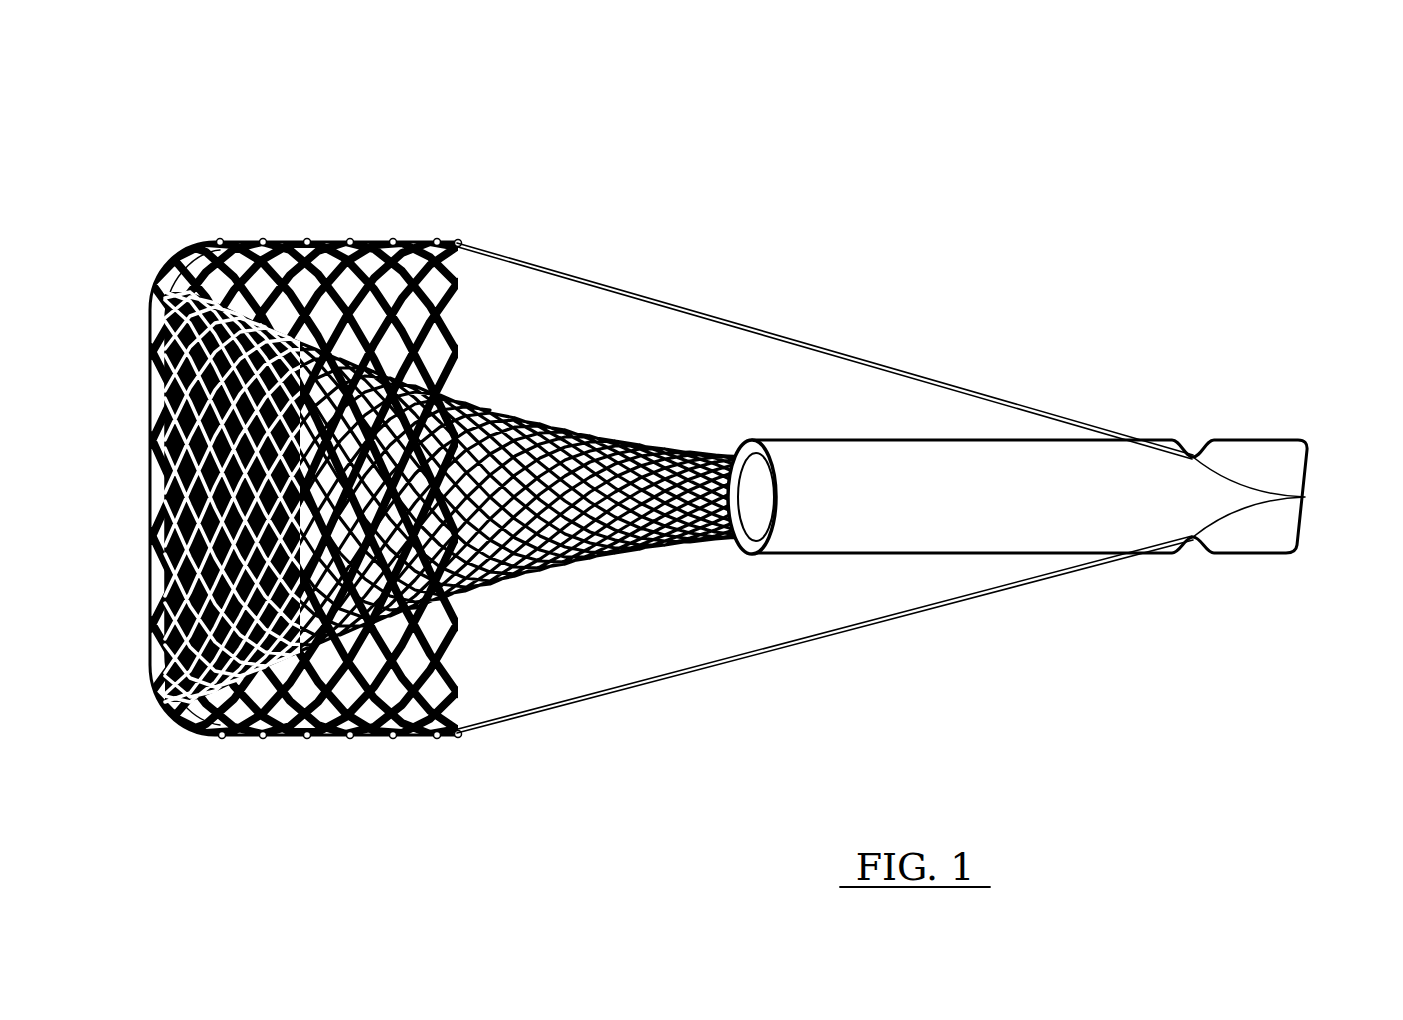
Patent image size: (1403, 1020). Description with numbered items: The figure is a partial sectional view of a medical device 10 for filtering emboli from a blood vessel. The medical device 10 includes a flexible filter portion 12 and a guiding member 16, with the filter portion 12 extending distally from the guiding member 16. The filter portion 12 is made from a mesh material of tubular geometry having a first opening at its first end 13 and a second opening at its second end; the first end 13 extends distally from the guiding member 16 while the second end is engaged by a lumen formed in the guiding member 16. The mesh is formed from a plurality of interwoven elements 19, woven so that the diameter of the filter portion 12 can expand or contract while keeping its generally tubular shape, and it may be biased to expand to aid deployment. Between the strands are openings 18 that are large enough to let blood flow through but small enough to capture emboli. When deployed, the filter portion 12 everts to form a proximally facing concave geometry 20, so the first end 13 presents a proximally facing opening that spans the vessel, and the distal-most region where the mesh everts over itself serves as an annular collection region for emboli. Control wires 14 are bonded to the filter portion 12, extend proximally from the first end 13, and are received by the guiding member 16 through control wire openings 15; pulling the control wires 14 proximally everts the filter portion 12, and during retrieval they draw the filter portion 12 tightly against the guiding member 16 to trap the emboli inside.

The medical device 10 is at (771, 511).
The filter portion 12 is at (627, 562).
The first end 13 is at (408, 328).
The control wires 14 is at (848, 355).
The control wire openings 15 is at (1312, 497).
The guiding member 16 is at (1255, 440).
The openings 18 is at (410, 737).
The interwoven elements 19 is at (378, 268).
The proximally facing concave geometry 20 is at (353, 511).